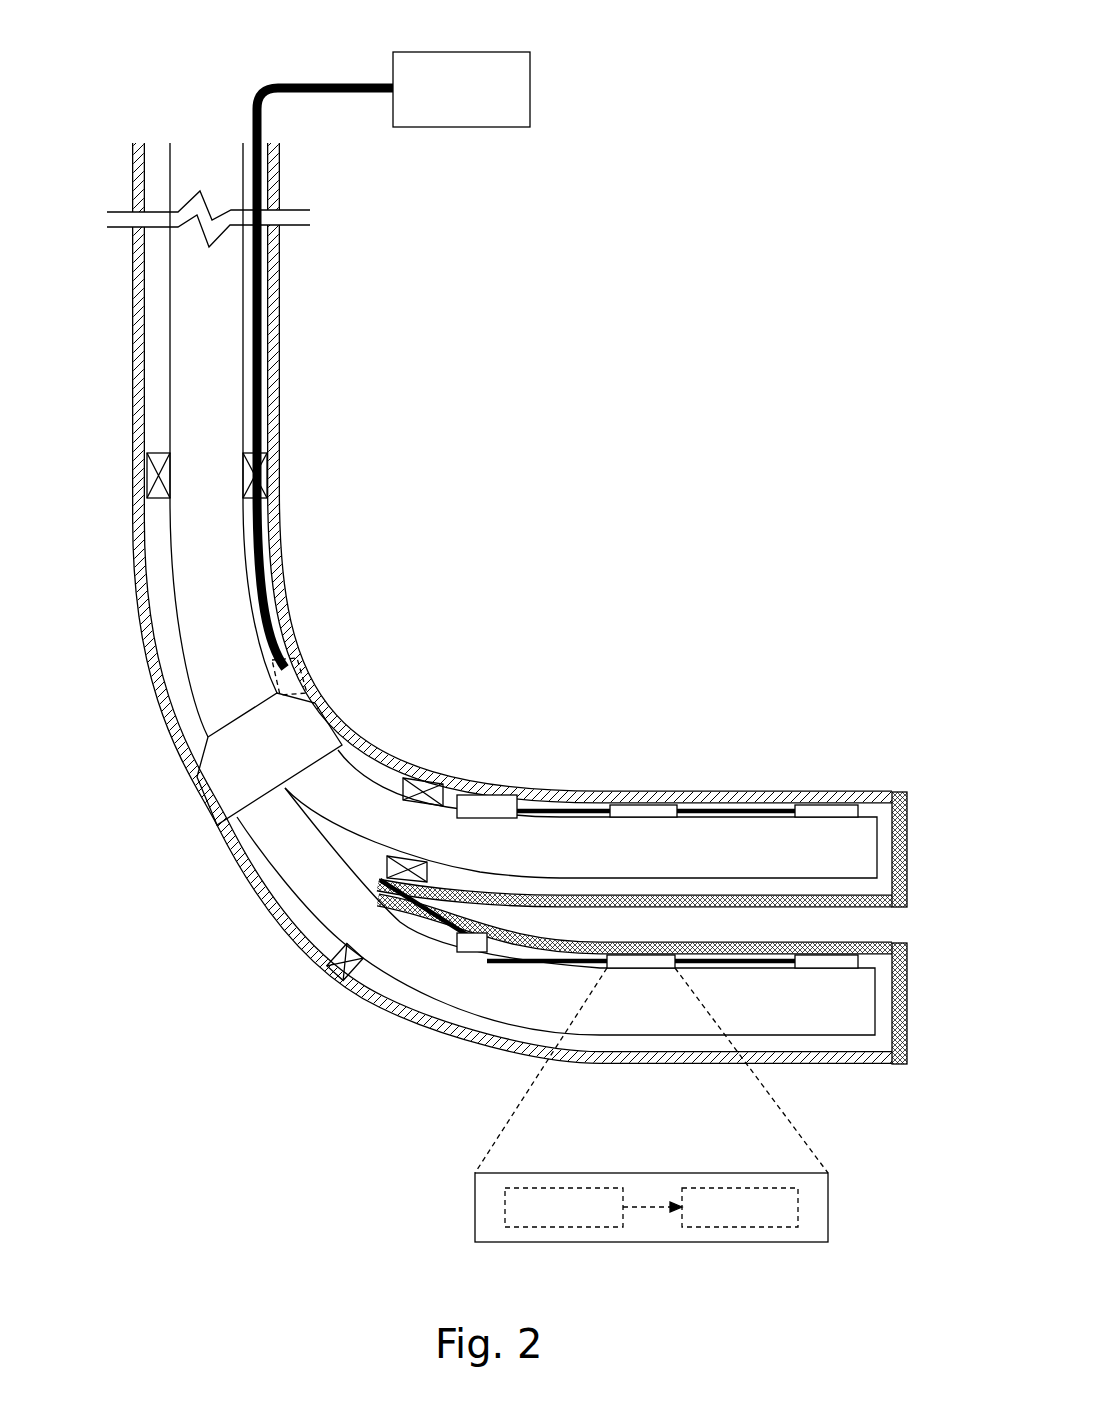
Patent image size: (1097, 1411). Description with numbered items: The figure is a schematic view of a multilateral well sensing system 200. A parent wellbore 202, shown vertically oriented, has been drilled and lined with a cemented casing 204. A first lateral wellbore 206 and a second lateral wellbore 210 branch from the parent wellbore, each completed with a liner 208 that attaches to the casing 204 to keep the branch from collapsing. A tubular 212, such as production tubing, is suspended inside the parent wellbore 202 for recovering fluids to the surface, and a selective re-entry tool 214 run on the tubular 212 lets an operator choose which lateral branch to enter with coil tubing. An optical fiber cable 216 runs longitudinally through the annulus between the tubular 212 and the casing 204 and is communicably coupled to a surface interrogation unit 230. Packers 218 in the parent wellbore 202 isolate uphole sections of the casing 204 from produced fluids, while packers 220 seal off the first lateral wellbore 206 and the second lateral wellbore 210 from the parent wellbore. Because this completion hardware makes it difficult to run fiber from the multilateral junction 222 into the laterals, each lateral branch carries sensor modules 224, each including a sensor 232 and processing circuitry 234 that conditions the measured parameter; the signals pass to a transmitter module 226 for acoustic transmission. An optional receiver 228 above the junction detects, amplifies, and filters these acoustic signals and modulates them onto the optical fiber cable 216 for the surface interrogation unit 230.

The multilateral well sensing system 200 is at (778, 95).
The parent wellbore 202 is at (160, 262).
The casing 204 is at (278, 356).
The first lateral wellbore 206 is at (897, 793).
The liner 208 is at (578, 795).
The second lateral wellbore 210 is at (895, 1040).
The tubular 212 is at (172, 358).
The selective re-entry tool 214 is at (200, 757).
The optical fiber cable 216 is at (262, 295).
The packers 218 is at (262, 475).
The packers 220 is at (425, 795).
The multilateral junction 222 is at (343, 860).
The sensor modules 224 is at (648, 805).
The transmitter module 226 is at (492, 807).
The receiver 228 is at (290, 673).
The surface interrogation unit 230 is at (455, 52).
The sensor 232 is at (565, 1227).
The processing circuitry 234 is at (740, 1227).